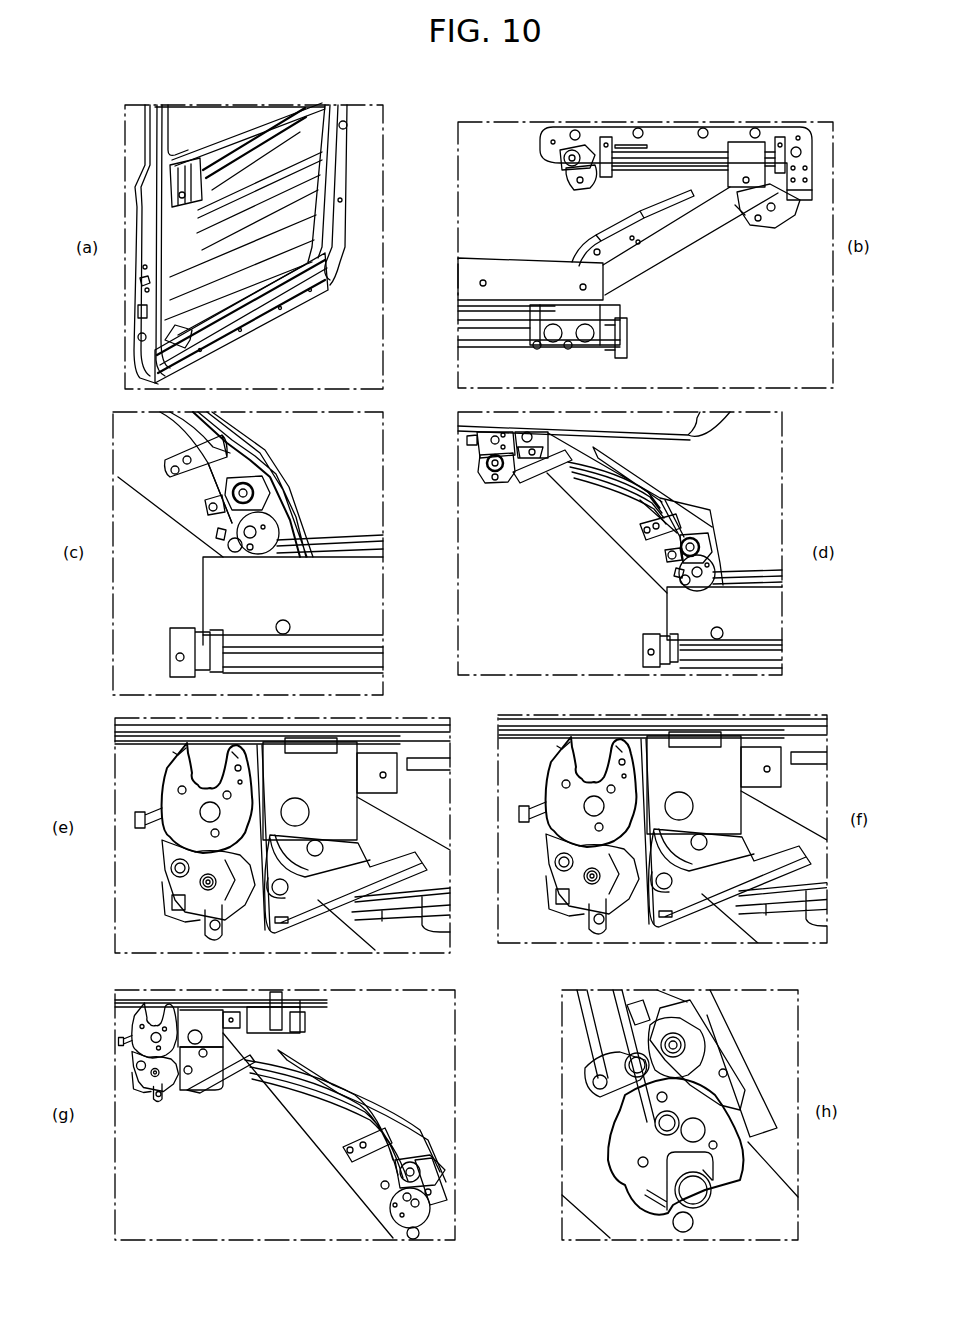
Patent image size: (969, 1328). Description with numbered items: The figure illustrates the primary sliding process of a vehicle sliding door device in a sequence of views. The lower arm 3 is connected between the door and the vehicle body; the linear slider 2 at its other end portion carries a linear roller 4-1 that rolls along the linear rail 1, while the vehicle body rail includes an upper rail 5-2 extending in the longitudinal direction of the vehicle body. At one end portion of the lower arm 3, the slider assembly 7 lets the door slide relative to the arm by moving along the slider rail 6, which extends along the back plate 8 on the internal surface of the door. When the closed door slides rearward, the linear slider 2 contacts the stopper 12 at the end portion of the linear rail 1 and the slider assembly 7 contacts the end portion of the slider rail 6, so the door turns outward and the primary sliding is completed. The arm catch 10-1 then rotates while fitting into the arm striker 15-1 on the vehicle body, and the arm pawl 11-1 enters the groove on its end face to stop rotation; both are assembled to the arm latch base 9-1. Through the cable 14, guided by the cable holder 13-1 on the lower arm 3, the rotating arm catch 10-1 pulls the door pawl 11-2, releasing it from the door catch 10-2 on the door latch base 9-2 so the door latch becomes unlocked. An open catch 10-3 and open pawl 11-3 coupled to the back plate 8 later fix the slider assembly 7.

The linear rail 1 is at (470, 318).
The linear slider 2 is at (525, 340).
The lower arm 3 is at (666, 244).
The linear roller 4-1 is at (568, 349).
The upper rail 5-2 is at (467, 268).
The slider rail 6 is at (685, 168).
The slider assembly 7 is at (783, 210).
The back plate 8 is at (722, 132).
The arm latch base 9-1 is at (432, 1185).
The door latch base 9-2 is at (172, 837).
The arm catch 10-1 is at (268, 530).
The door catch 10-2 is at (480, 455).
The open catch 10-3 is at (578, 178).
The arm pawl 11-1 is at (258, 488).
The door pawl 11-2 is at (488, 472).
The open pawl 11-3 is at (568, 160).
The stopper 12 is at (615, 345).
The cable holder 13-1 is at (168, 468).
The cable 14 is at (245, 455).
The arm striker 15-1 is at (228, 541).